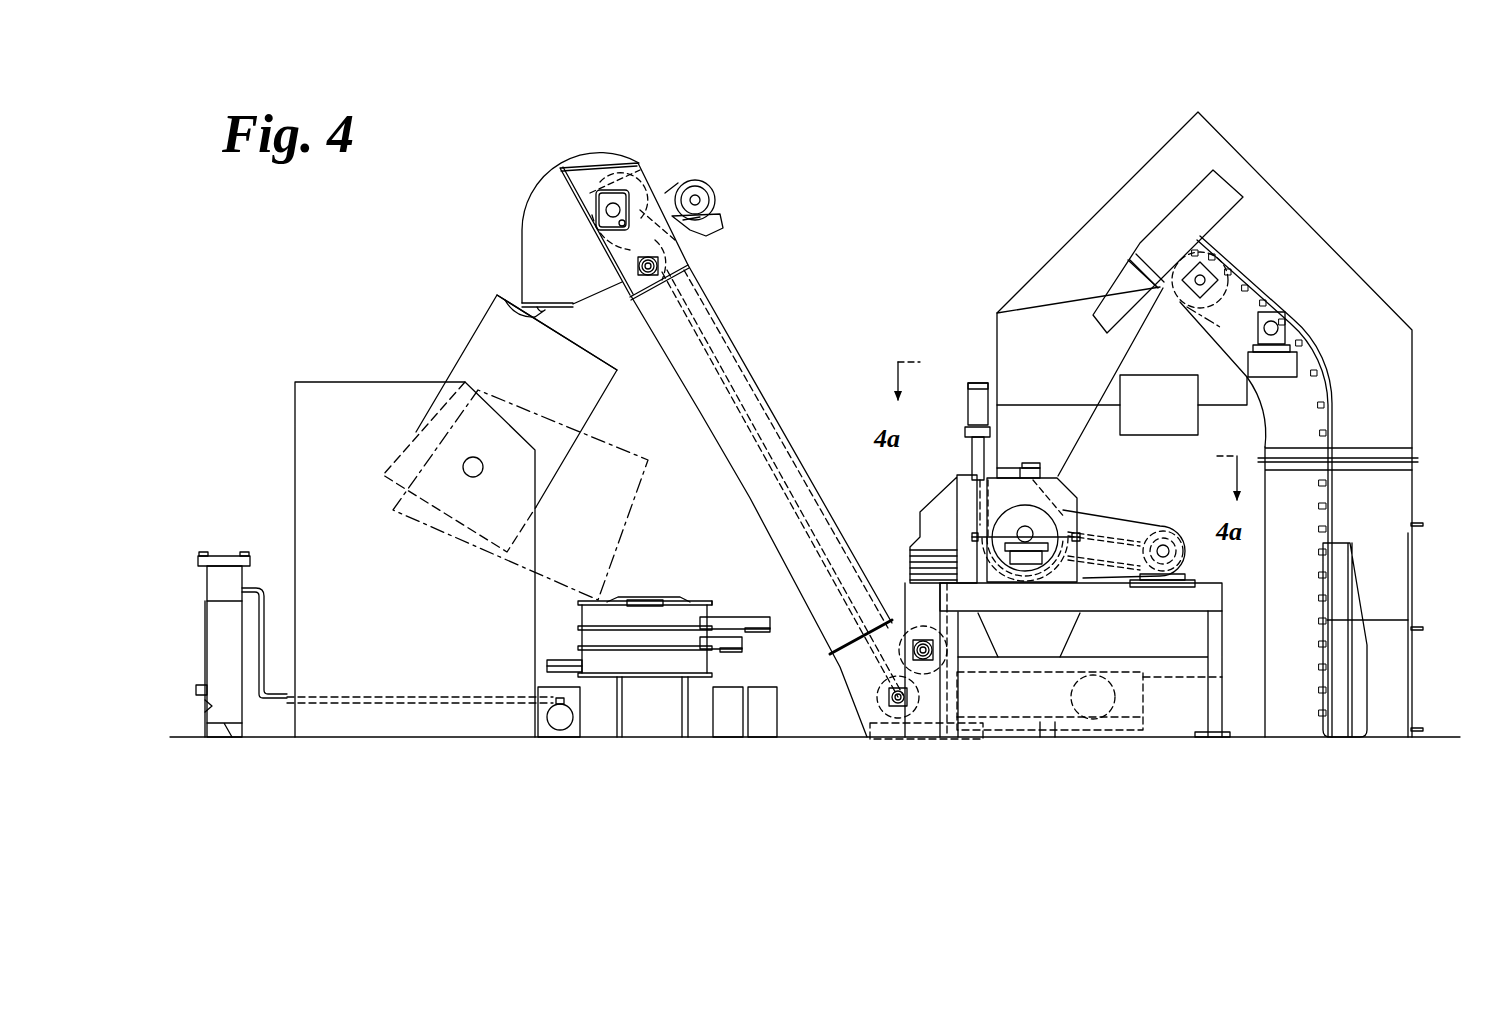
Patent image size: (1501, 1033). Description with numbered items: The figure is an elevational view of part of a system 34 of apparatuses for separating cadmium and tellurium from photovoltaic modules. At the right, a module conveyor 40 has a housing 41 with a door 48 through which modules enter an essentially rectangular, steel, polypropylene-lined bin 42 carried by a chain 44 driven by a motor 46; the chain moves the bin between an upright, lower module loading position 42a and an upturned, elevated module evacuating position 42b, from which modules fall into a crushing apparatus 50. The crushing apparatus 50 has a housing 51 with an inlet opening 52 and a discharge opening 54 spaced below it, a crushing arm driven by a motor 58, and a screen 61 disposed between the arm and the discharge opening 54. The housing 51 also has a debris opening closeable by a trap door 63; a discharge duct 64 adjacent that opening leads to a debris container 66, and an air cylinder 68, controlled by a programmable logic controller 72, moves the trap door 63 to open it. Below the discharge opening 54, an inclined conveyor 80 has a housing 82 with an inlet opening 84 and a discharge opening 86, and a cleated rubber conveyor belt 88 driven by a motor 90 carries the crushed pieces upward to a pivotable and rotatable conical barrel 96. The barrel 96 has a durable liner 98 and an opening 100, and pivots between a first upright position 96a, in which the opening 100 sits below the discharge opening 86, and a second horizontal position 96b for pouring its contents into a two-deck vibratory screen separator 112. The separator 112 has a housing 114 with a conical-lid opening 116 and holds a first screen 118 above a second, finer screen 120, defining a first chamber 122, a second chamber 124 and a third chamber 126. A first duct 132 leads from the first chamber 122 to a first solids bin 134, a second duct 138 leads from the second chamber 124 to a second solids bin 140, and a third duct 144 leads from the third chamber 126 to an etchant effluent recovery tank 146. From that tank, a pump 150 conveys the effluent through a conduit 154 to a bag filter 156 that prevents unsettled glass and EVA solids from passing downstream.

The system 34 is at (830, 262).
The module conveyor 40 is at (1340, 243).
The housing 41 is at (1378, 298).
The bin 42 is at (1182, 222).
The module loading position 42a is at (1372, 678).
The module evacuating position 42b is at (1140, 238).
The chain 44 is at (1316, 528).
The motor 46 is at (1222, 330).
The door 48 is at (1411, 580).
The crushing apparatus 50 is at (1060, 477).
The housing 51 is at (1070, 485).
The inlet opening 52 is at (1028, 466).
The discharge opening 54 is at (1037, 672).
The motor 58 is at (1162, 520).
The screen 61 is at (1060, 590).
The trap door 63 is at (980, 505).
The discharge duct 64 is at (940, 510).
The debris container 66 is at (872, 742).
The air cylinder 68 is at (976, 383).
The programmable logic controller 72 is at (1140, 375).
The inclined conveyor 80 is at (770, 393).
The housing 82 is at (670, 360).
The inlet opening 84 is at (1000, 658).
The discharge opening 86 is at (530, 312).
The conveyor belt 88 is at (790, 435).
The motor 90 is at (655, 192).
The conical barrel 96 is at (520, 357).
The first position 96a is at (440, 368).
The second position 96b is at (655, 458).
The liner 98 is at (490, 300).
The opening 100 is at (567, 337).
The screen separator 112 is at (690, 598).
The housing 114 is at (712, 605).
The opening 116 is at (615, 601).
The first screen 118 is at (580, 602).
The second screen 120 is at (580, 628).
The first chamber 122 is at (620, 603).
The second chamber 124 is at (633, 645).
The third chamber 126 is at (668, 660).
The first duct 132 is at (770, 625).
The first solids bin 134 is at (763, 730).
The second duct 138 is at (745, 645).
The second solids bin 140 is at (728, 730).
The third duct 144 is at (548, 665).
The etchant effluent recovery tank 146 is at (585, 728).
The pump 150 is at (557, 720).
The conduit 154 is at (393, 705).
The bag filter 156 is at (204, 592).